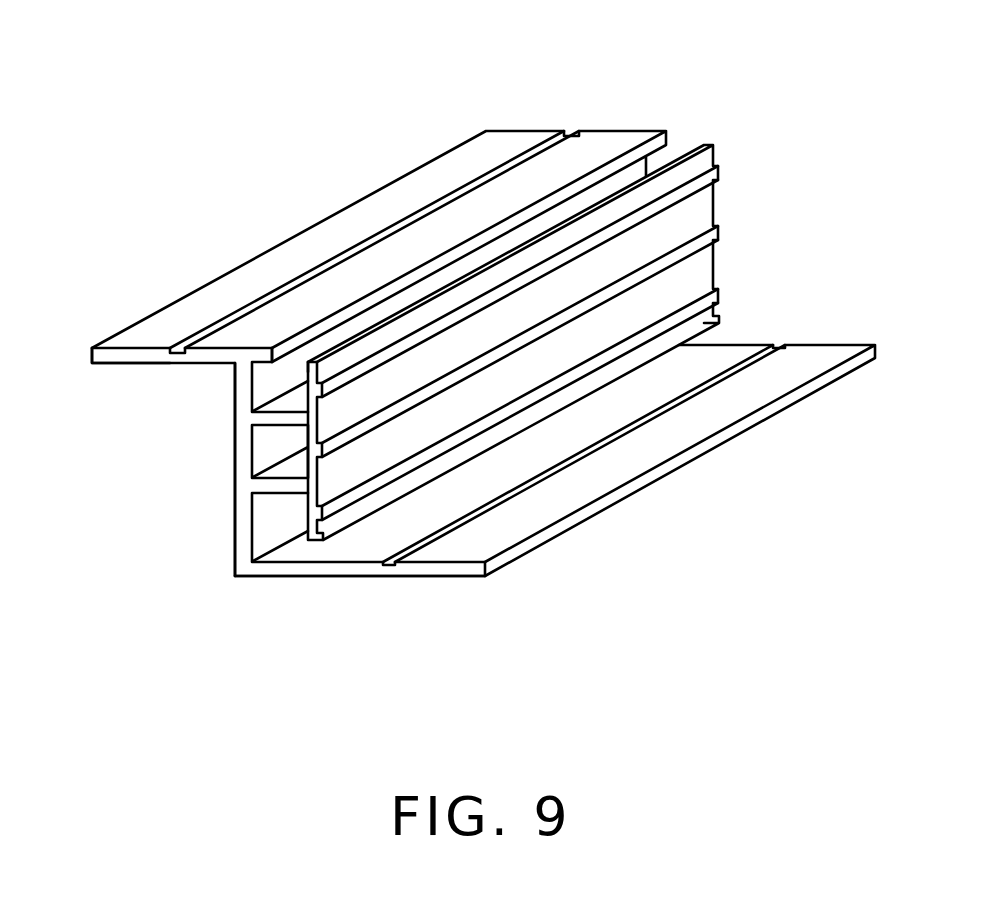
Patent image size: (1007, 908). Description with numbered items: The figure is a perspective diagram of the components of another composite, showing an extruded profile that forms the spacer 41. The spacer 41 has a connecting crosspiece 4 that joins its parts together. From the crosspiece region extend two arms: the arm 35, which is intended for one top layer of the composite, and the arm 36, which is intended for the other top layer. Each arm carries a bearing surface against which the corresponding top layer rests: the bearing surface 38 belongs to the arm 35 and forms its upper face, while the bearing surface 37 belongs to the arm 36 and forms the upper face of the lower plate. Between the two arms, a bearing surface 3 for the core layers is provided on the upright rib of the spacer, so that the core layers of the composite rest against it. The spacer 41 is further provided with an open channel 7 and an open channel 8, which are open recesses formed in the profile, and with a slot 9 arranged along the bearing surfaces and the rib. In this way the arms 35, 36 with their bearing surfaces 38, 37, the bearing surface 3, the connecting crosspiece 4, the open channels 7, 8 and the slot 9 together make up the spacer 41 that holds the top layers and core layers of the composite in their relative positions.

The bearing surface for the core layers 3 is at (677, 220).
The connecting crosspiece 4 is at (242, 515).
The open channel 7 is at (290, 369).
The open channel 8 is at (273, 522).
The slot 9 is at (522, 153).
The arm for the top layer 35 is at (121, 351).
The arm for the top layer 36 is at (315, 568).
The bearing surface of the arm 37 is at (530, 515).
The bearing surface of the arm 38 is at (458, 212).
The spacer 41 is at (278, 478).